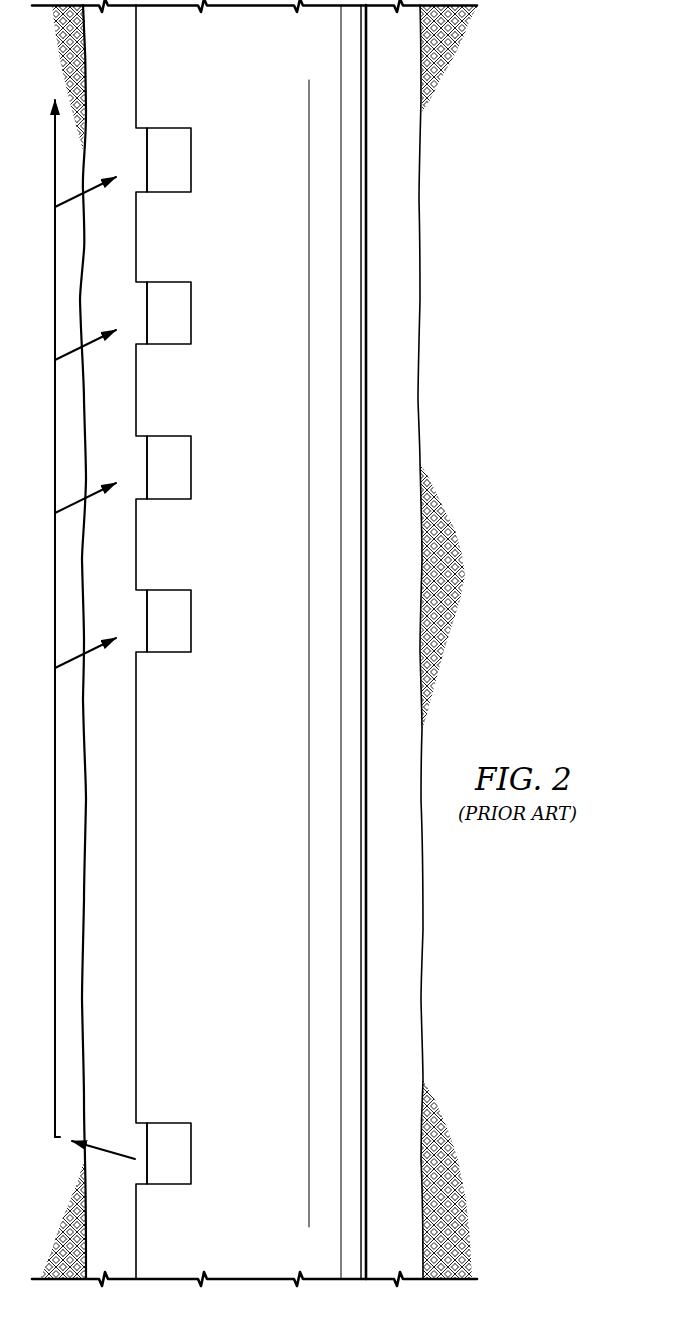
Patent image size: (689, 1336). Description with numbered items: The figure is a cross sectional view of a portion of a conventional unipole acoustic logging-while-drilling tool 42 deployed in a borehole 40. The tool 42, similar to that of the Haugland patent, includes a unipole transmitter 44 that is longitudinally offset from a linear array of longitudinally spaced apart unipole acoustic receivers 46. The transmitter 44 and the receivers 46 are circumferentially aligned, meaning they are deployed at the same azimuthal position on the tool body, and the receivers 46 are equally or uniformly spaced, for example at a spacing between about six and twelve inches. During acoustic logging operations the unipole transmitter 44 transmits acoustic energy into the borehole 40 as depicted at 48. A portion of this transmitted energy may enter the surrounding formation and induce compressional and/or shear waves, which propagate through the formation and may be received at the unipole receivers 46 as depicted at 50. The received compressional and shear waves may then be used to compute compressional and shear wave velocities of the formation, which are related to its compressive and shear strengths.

The borehole 40 is at (423, 935).
The unipole acoustic LWD tool 42 is at (367, 596).
The unipole transmitter 44 is at (170, 1184).
The unipole acoustic receivers 46 is at (172, 192).
The transmitted acoustic energy 48 is at (118, 1160).
The received waves 50 is at (100, 650).